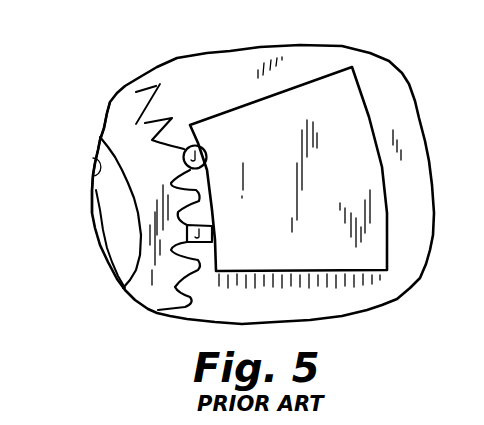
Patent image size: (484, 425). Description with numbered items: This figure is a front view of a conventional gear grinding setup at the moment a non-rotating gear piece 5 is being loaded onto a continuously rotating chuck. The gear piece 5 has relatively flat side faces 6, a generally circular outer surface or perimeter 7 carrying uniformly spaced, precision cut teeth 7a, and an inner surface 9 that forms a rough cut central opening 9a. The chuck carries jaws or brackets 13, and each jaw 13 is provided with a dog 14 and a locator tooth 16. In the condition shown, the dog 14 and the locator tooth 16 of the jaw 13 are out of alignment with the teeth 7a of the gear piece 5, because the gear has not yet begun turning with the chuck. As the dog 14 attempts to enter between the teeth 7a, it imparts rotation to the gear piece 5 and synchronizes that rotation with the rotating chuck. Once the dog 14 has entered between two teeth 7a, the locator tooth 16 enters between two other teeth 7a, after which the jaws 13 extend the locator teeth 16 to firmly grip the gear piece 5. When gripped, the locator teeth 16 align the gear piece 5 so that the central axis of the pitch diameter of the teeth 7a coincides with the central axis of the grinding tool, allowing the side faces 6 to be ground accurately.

The gear piece 5 is at (109, 97).
The side face 6 is at (115, 113).
The outer surface 7 is at (150, 110).
The teeth 7a is at (160, 84).
The inner surface 9 is at (93, 152).
The central opening 9a is at (95, 189).
The jaw 13 is at (354, 177).
The dog 14 is at (203, 155).
The locator tooth 16 is at (213, 233).